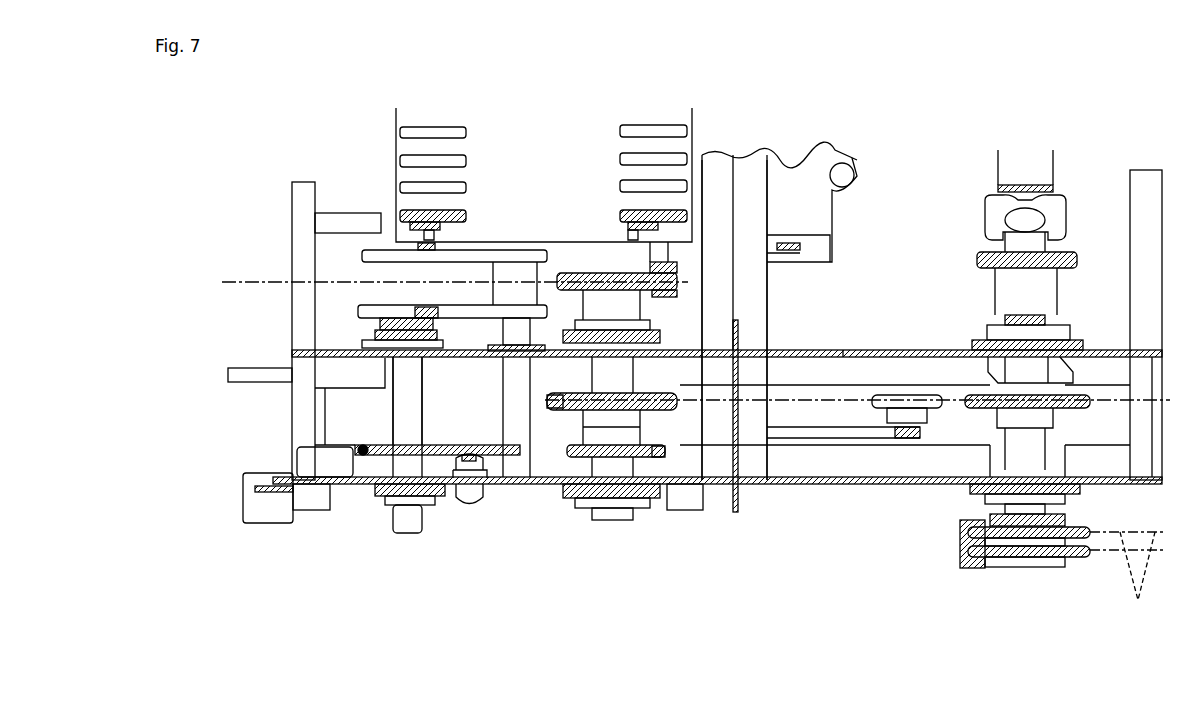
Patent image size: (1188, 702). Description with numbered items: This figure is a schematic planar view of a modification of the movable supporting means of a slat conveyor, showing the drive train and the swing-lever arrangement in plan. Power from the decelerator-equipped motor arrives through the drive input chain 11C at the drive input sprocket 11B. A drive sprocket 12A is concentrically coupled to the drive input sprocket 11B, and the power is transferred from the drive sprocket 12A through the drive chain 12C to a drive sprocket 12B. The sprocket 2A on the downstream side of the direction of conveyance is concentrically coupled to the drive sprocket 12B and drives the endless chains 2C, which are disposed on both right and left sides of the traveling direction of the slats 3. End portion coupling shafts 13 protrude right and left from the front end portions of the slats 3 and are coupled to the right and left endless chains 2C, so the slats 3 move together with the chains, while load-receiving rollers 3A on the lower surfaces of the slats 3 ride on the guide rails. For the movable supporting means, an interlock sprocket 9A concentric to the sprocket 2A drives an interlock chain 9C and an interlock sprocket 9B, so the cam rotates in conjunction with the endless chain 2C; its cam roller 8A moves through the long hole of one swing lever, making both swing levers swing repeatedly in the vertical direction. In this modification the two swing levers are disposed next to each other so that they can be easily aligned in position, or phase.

The slat 3 is at (396, 141).
The load-receiving roller 3A is at (430, 220).
The endless chain 2C is at (484, 246).
The sprocket 2A is at (573, 268).
The cam roller 8A is at (448, 322).
The interlock sprocket 9B is at (366, 446).
The interlock chain 9C is at (564, 496).
The drive sprocket 12B is at (688, 358).
The interlock sprocket 9A is at (640, 452).
The end portion coupling shaft 13 is at (663, 258).
The drive chain 12C is at (843, 350).
The drive sprocket 12A is at (1062, 378).
The drive input sprocket 11B is at (1025, 567).
The drive input chain 11C is at (1127, 580).